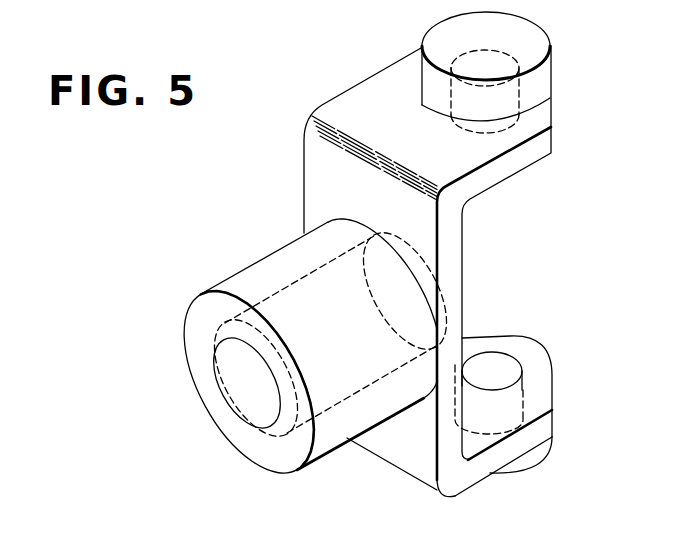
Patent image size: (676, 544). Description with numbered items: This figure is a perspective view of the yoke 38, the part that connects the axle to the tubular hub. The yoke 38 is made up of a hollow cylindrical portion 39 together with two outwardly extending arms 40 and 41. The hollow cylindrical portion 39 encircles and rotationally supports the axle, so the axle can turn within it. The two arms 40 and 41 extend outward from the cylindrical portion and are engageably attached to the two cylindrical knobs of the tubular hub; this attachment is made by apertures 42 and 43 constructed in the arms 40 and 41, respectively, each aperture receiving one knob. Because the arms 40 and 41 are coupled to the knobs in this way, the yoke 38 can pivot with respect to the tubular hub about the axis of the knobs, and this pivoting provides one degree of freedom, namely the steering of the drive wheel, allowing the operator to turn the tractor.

The yoke 38 is at (287, 122).
The hollow cylindrical portion 39 is at (252, 282).
The arm 40 is at (540, 121).
The arm 41 is at (535, 403).
The aperture 42 is at (513, 58).
The aperture 43 is at (513, 353).